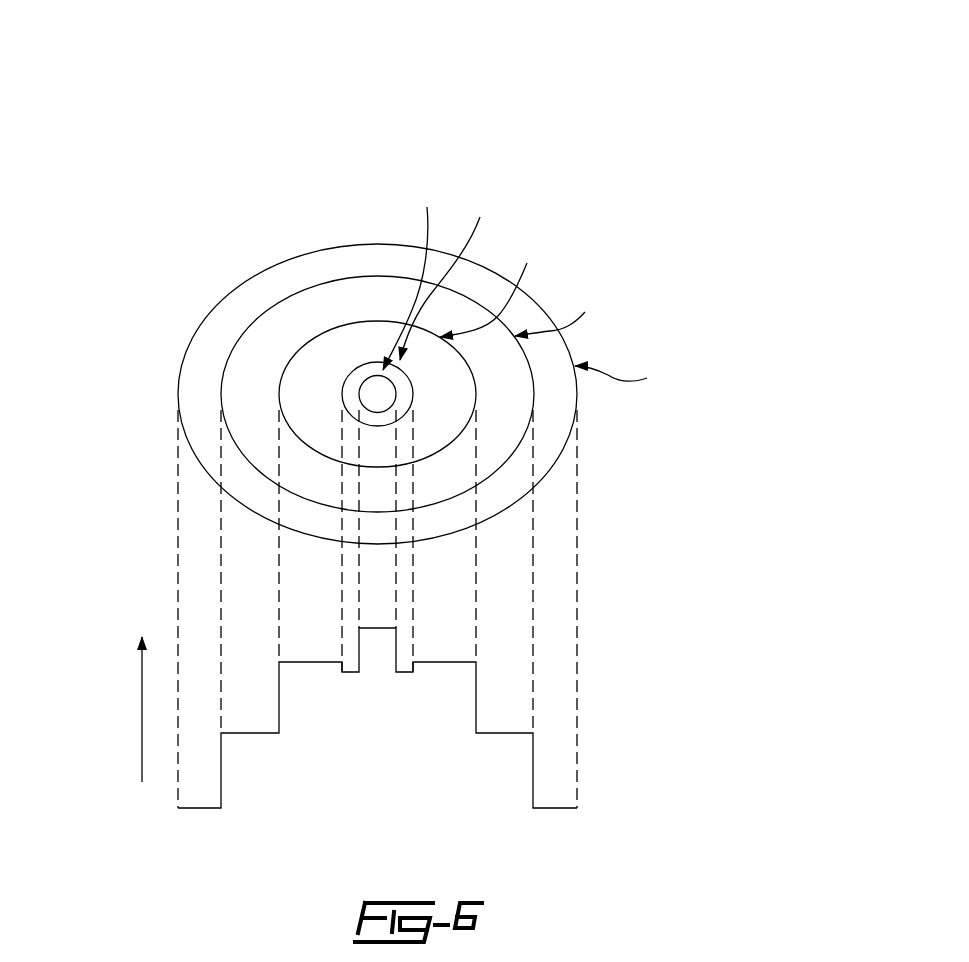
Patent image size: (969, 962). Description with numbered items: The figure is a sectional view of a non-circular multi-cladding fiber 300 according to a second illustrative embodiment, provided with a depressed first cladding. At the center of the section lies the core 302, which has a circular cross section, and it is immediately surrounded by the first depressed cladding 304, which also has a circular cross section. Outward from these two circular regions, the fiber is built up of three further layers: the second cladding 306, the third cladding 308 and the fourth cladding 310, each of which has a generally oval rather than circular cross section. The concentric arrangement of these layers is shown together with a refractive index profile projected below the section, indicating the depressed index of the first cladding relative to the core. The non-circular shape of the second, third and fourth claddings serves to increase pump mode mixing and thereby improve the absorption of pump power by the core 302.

The multi-cladding fiber 300 is at (120, 105).
The core 302 is at (364, 372).
The first depressed cladding 304 is at (342, 385).
The second cladding 306 is at (312, 337).
The third cladding 308 is at (323, 283).
The fourth cladding 310 is at (177, 377).